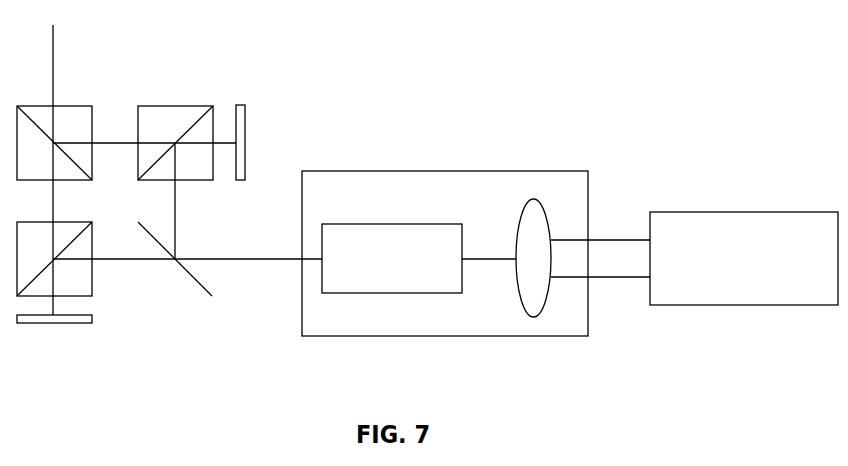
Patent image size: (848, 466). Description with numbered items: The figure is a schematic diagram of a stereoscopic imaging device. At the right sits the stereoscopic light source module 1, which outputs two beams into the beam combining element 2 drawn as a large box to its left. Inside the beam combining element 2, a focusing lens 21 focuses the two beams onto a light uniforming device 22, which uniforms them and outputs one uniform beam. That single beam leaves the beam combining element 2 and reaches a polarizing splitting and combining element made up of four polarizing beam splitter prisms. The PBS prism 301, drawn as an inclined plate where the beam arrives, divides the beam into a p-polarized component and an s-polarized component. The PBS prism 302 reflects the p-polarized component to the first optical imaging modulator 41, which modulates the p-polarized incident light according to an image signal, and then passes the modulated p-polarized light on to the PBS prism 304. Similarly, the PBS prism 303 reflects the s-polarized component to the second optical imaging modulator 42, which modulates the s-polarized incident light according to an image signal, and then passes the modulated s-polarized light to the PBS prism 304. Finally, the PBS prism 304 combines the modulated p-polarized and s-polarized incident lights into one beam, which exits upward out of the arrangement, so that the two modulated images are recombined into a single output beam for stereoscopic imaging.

The stereoscopic light source module 1 is at (743, 212).
The beam combining element 2 is at (443, 171).
The focusing lens 21 is at (547, 218).
The light uniforming device 22 is at (417, 224).
The PBS prism 301 is at (207, 287).
The PBS prism 302 is at (83, 222).
The PBS prism 303 is at (197, 106).
The PBS prism 304 is at (91, 106).
The first optical imaging modulator 41 is at (92, 317).
The second optical imaging modulator 42 is at (246, 123).